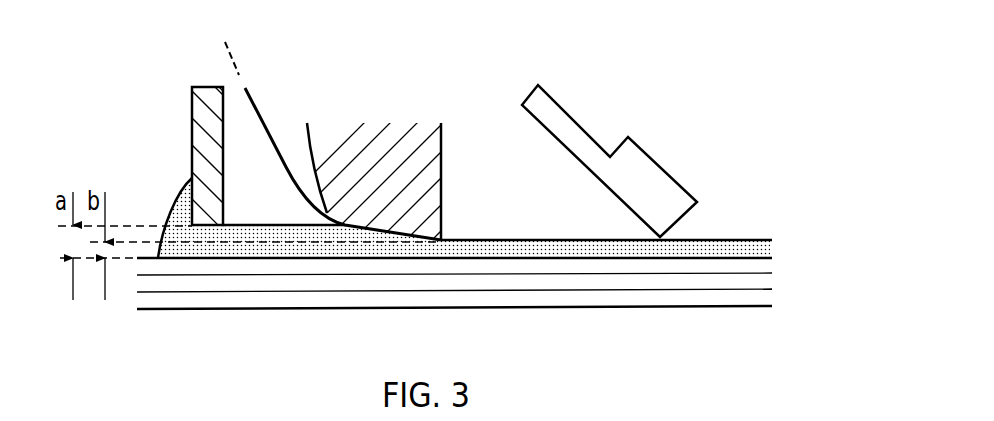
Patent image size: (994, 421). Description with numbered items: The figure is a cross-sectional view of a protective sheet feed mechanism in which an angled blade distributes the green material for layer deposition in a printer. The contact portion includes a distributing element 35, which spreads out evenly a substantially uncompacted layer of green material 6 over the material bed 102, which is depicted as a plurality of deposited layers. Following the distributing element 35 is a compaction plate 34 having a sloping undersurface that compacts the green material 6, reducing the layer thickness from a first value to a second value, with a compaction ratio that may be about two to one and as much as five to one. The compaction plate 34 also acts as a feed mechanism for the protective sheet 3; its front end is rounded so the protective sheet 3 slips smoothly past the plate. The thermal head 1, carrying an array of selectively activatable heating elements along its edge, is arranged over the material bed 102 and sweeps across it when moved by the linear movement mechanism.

The thermal head 1 is at (567, 125).
The protective sheet 3 is at (258, 112).
The green material 6 is at (247, 252).
The compaction plate 34 is at (433, 160).
The distributing element 35 is at (201, 129).
The material bed 102 is at (690, 297).